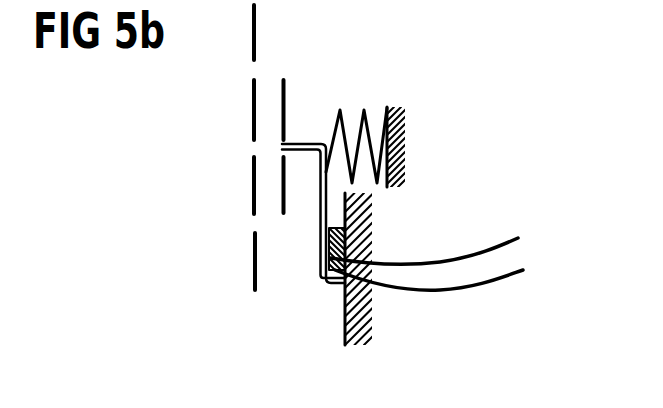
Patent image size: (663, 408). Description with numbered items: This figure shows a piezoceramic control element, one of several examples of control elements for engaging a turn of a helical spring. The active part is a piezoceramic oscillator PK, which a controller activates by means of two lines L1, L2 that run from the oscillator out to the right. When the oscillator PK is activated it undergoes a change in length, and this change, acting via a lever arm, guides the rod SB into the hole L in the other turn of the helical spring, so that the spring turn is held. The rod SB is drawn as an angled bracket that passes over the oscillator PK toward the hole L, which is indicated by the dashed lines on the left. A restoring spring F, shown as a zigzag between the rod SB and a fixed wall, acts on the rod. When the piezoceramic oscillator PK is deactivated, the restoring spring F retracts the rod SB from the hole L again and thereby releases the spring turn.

The hole L is at (253, 147).
The rod SB is at (298, 139).
The restoring spring F is at (362, 110).
The piezoceramic oscillator PK is at (324, 262).
The line L1 is at (463, 258).
The line L2 is at (480, 288).